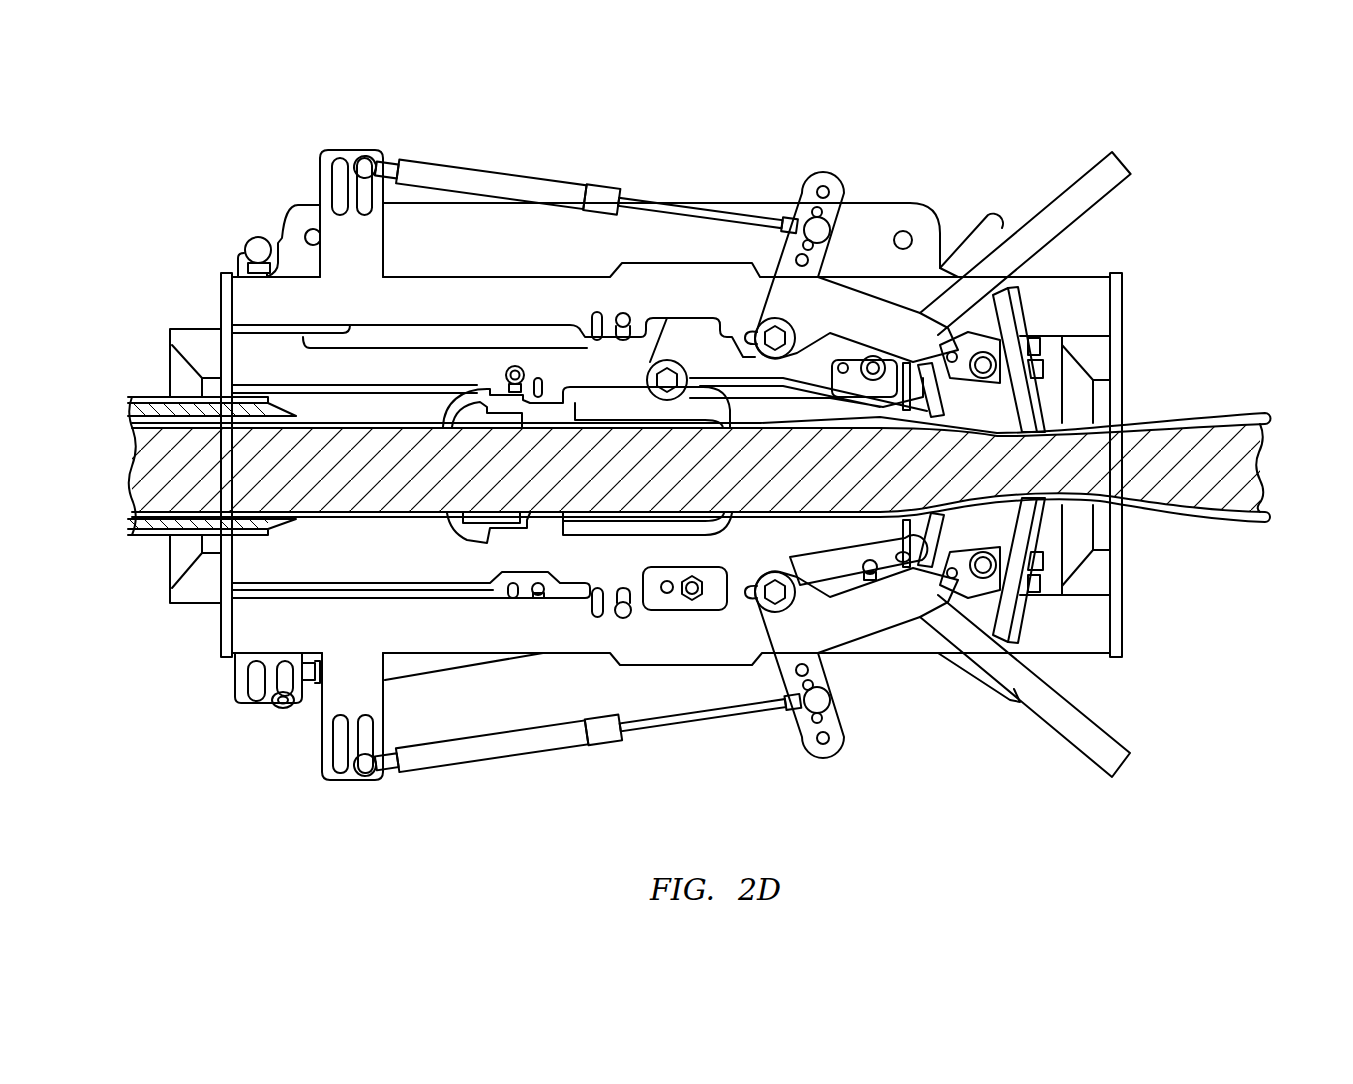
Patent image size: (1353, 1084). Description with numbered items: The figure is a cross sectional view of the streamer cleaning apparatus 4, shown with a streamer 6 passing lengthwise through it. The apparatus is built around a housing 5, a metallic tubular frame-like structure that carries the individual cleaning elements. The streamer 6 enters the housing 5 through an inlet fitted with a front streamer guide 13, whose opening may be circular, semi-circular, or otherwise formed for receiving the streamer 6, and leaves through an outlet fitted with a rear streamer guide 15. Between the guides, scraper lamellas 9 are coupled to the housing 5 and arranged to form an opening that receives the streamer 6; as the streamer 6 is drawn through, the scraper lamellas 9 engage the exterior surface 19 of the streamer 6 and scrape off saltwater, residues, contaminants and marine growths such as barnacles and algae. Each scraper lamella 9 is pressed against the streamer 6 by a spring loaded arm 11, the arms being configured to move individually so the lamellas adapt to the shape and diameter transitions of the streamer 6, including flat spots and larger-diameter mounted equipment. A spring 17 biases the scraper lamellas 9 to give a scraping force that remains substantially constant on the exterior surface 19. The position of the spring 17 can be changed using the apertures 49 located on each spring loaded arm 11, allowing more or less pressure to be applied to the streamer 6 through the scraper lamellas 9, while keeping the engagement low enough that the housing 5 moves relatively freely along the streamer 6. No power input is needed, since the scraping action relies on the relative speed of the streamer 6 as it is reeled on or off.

The streamer cleaning apparatus 4 is at (227, 176).
The housing 5 is at (360, 663).
The streamer 6 is at (1226, 436).
The scraper lamellas 9 is at (1037, 420).
The spring loaded arms 11 is at (1060, 187).
The front streamer guide 13 is at (193, 353).
The rear streamer guide 15 is at (1087, 343).
The spring 17 is at (490, 162).
The exterior surface 19 is at (1250, 490).
The apertures 49 is at (832, 182).